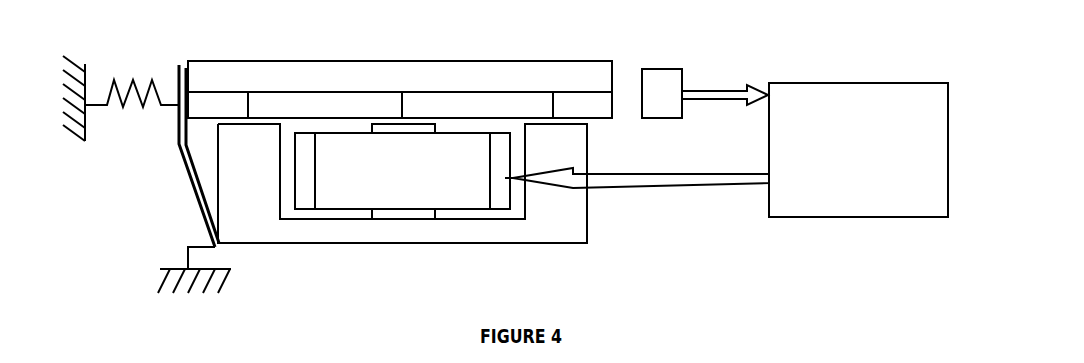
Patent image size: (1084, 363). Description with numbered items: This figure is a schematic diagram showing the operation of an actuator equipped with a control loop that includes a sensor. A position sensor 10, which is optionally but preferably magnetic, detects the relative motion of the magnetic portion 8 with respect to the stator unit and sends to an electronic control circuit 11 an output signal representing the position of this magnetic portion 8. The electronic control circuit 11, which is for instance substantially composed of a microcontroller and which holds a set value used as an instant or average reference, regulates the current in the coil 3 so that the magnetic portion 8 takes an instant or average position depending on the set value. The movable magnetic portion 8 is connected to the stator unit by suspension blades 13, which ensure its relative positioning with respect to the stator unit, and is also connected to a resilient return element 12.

The coil 3 is at (419, 205).
The magnetic portion 8 is at (492, 58).
The position sensor 10 is at (664, 81).
The electronic control circuit 11 is at (821, 94).
The resilient return element 12 is at (116, 79).
The suspension blades 13 is at (190, 173).